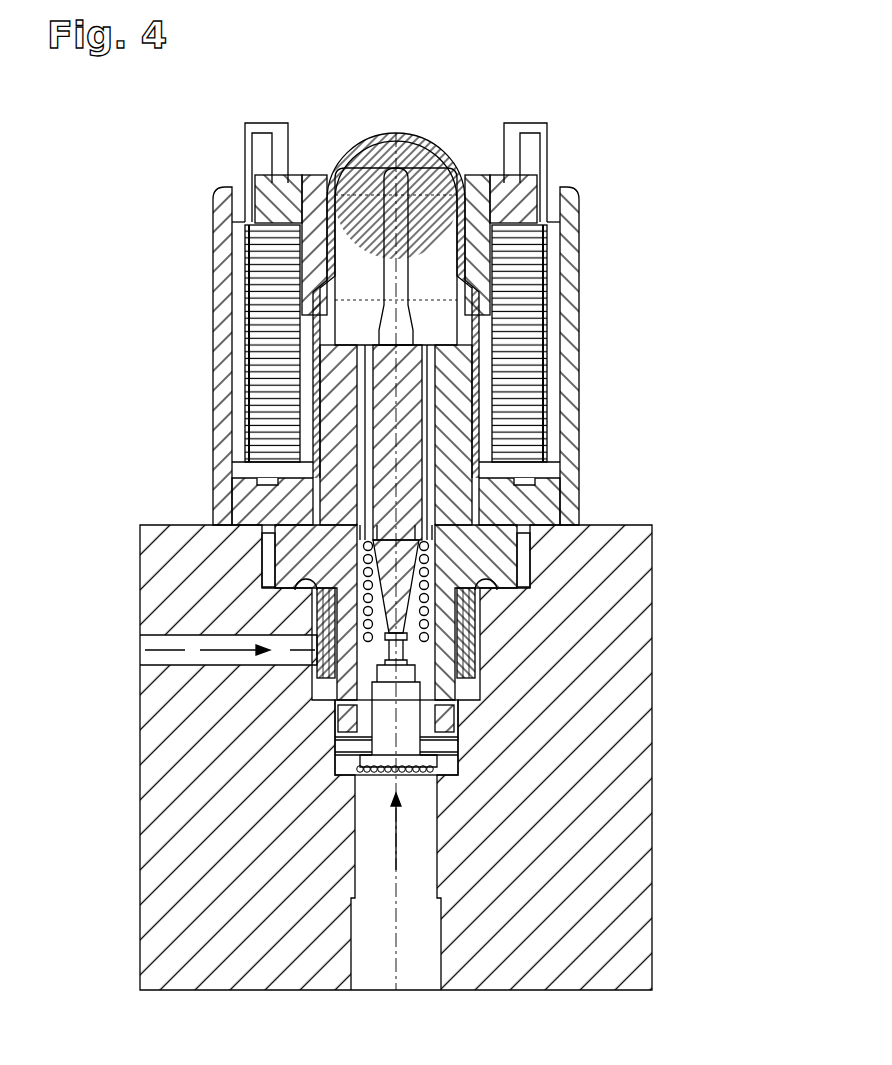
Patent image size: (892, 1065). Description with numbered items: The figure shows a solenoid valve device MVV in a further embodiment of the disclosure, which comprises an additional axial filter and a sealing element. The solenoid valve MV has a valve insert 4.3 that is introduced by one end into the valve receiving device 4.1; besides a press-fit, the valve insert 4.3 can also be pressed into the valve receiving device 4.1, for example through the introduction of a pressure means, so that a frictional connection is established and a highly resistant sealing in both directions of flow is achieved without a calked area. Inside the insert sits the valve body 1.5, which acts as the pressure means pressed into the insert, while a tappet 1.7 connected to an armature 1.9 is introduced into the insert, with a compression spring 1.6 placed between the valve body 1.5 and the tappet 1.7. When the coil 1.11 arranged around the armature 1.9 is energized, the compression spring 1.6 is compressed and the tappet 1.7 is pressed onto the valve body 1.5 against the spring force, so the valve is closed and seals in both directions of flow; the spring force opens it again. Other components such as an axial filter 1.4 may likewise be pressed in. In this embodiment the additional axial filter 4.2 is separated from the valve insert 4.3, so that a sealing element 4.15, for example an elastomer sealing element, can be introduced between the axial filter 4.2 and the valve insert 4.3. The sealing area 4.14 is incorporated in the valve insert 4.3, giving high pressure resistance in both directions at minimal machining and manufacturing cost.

The solenoid valve MV is at (383, 90).
The solenoid valve device MVV is at (650, 366).
The axial filter 1.4 is at (300, 658).
The valve body 1.5 is at (450, 628).
The compression spring 1.6 is at (348, 578).
The tappet 1.7 is at (312, 483).
The armature 1.9 is at (437, 250).
The coil 1.11 is at (272, 288).
The valve receiving device 4.1 is at (610, 795).
The axial filter 4.2 is at (345, 772).
The valve insert 4.3 is at (452, 555).
The sealing area 4.14 is at (450, 718).
The sealing element 4.15 is at (340, 718).